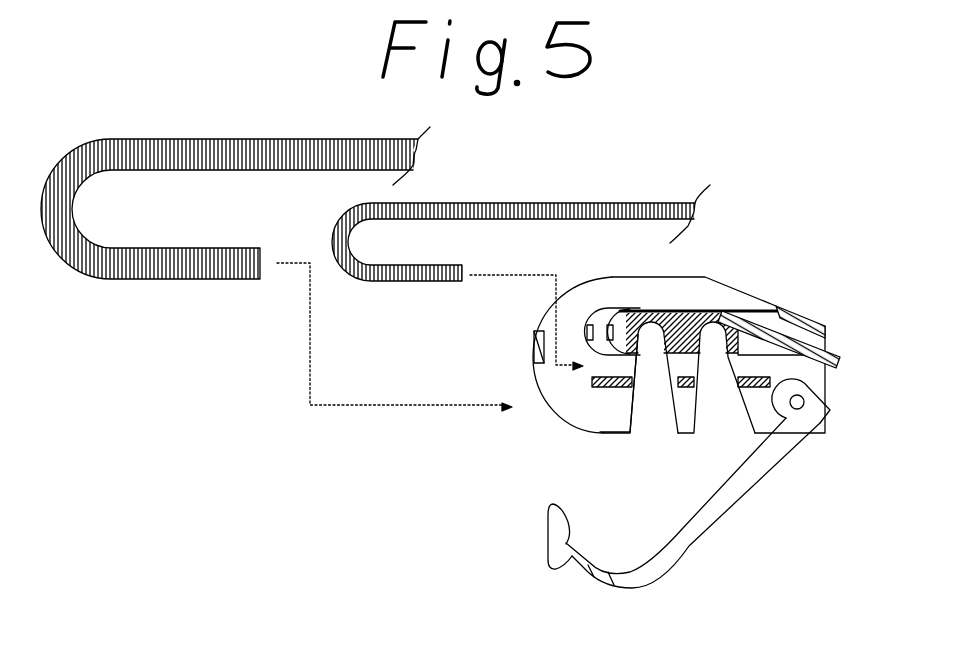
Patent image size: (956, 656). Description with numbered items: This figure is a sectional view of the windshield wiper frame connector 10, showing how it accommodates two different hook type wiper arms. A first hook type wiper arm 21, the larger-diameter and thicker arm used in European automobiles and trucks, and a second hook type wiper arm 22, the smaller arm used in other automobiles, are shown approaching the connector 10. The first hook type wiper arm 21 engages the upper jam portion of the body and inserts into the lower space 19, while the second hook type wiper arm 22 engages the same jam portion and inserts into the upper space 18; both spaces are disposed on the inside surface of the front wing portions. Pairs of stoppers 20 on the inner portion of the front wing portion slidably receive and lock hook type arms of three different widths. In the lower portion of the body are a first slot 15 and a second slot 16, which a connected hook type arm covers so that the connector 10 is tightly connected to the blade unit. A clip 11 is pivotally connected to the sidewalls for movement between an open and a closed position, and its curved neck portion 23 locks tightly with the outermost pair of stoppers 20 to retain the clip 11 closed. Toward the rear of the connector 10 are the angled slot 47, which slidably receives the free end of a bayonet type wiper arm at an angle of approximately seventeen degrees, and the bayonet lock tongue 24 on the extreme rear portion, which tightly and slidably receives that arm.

The windshield wiper frame connector 10 is at (810, 310).
The clip 11 is at (758, 494).
The first slot 15 is at (663, 313).
The second slot 16 is at (728, 313).
The upper space 18 is at (603, 365).
The lower space 19 is at (617, 404).
The pairs of stoppers 20 is at (621, 325).
The first hook type wiper arm 21 is at (217, 140).
The second hook type wiper arm 22 is at (603, 203).
The curved neck portion 23 is at (597, 580).
The bayonet lock tongue 24 is at (840, 367).
The angled slot 47 is at (827, 338).